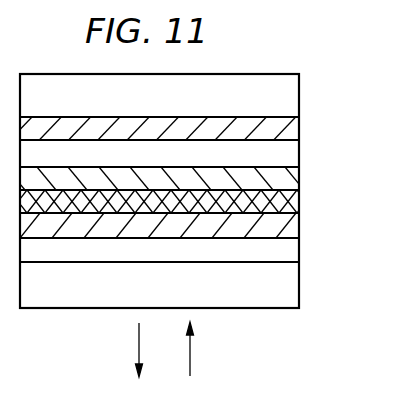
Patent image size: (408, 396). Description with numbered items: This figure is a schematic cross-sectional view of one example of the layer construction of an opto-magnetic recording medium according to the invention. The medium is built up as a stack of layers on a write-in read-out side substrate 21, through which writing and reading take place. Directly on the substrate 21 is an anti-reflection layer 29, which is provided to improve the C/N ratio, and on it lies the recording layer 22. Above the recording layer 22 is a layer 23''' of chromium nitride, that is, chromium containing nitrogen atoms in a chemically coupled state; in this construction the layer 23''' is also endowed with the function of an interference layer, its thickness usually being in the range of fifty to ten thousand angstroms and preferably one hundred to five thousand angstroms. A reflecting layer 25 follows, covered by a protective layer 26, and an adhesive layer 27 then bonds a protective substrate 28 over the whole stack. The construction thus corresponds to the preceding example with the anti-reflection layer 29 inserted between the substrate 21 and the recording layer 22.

The write-in read-out side substrate 21 is at (292, 283).
The recording layer 22 is at (292, 228).
The layer of chromium nitride 23''' is at (190, 205).
The reflecting layer 25 is at (292, 178).
The protective layer 26 is at (292, 156).
The adhesive layer 27 is at (292, 132).
The protective substrate 28 is at (292, 92).
The anti-reflection layer 29 is at (292, 255).